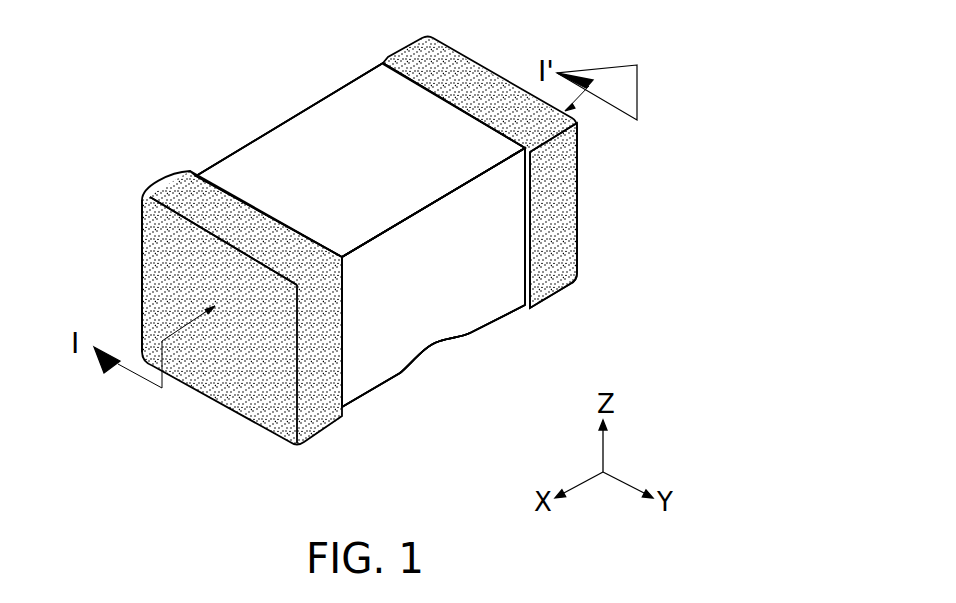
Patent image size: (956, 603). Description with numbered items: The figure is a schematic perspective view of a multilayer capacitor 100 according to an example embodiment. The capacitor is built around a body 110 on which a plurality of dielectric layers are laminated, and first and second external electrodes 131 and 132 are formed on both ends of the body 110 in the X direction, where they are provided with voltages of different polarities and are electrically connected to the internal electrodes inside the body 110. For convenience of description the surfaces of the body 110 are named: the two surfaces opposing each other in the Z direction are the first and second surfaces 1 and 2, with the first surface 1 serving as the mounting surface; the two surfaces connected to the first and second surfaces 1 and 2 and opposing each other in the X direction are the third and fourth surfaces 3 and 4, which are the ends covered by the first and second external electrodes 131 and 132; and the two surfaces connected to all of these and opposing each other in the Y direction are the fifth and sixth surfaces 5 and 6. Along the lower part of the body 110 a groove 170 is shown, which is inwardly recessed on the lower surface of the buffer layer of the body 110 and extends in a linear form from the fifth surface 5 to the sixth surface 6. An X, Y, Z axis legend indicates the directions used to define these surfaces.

The multilayer capacitor 100 is at (164, 46).
The body 110 is at (244, 172).
The first external electrode 131 is at (317, 418).
The second external electrode 132 is at (553, 282).
The groove 170 is at (447, 342).
The first surface 1 is at (385, 335).
The second surface 2 is at (381, 128).
The third surface 3 is at (193, 275).
The fourth surface 4 is at (557, 198).
The fifth surface 5 is at (323, 163).
The sixth surface 6 is at (450, 295).